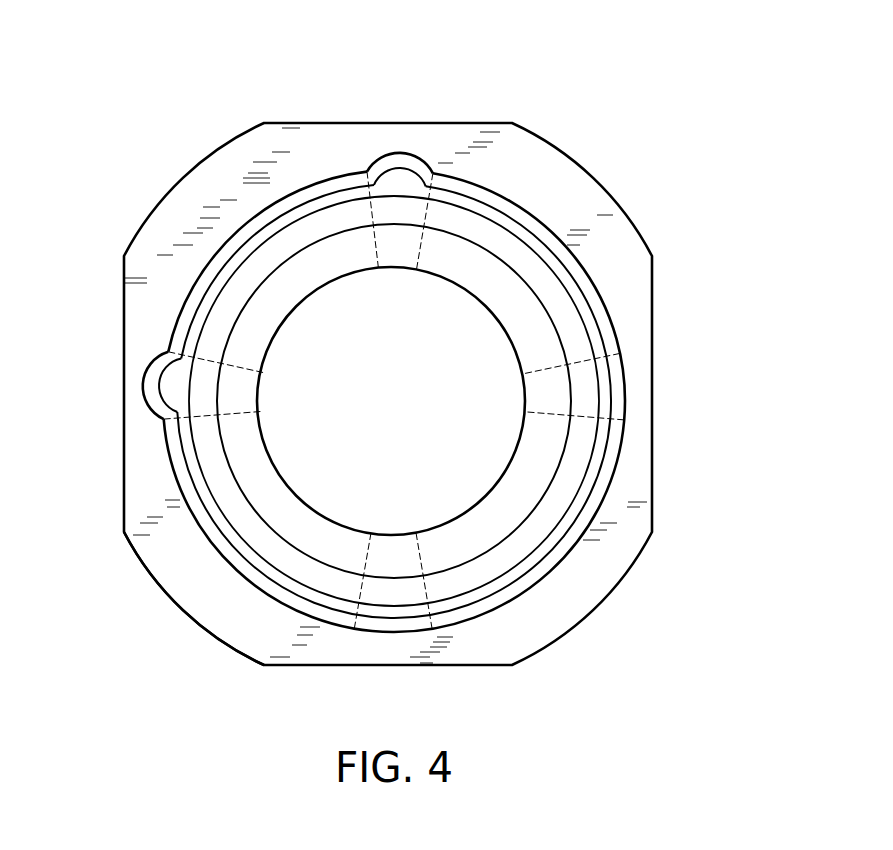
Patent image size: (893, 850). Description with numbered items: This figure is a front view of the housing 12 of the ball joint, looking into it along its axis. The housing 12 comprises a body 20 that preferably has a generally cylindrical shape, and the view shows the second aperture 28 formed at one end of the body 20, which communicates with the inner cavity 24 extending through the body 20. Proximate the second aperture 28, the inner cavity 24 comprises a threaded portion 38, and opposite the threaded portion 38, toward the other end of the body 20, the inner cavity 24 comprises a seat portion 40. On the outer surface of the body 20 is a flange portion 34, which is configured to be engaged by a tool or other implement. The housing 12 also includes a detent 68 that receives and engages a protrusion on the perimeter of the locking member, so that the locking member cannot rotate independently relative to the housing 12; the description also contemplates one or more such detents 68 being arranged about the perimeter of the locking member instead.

The housing 12 is at (394, 340).
The body 20 is at (637, 338).
The inner cavity 24 is at (468, 478).
The second aperture 28 is at (610, 467).
The flange portion 34 is at (180, 583).
The threaded portion 38 is at (322, 188).
The seat portion 40 is at (265, 322).
The detent 68 is at (402, 153).